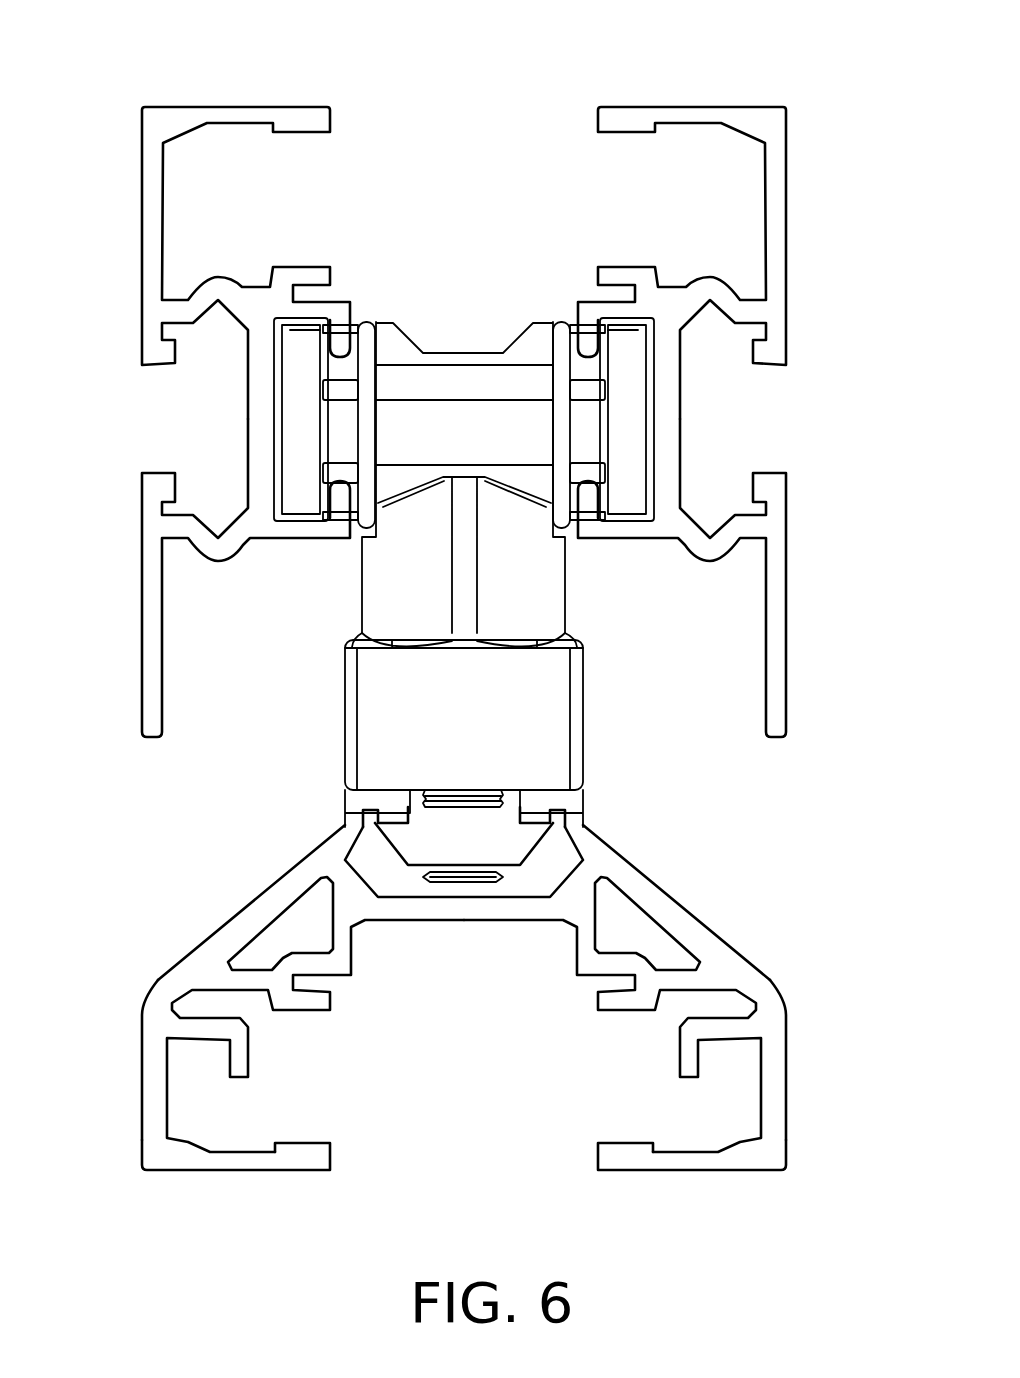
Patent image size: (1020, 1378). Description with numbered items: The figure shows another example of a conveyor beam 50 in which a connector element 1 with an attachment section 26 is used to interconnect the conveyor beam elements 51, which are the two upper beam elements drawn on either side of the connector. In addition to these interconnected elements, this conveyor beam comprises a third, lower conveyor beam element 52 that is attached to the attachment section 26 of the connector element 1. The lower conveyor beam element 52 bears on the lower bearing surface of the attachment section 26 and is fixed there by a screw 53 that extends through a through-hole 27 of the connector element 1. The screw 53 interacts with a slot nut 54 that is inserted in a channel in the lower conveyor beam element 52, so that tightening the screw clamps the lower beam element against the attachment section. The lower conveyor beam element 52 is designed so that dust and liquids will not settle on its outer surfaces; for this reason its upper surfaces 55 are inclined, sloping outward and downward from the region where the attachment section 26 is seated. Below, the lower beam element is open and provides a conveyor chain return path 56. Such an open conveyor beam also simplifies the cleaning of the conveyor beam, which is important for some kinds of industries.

The conveyor beam 50 is at (824, 68).
The conveyor beam element 51 is at (148, 228).
The lower conveyor beam element 52 is at (727, 970).
The inclined upper surface 55 is at (236, 880).
The conveyor chain return path 56 is at (548, 1170).
The connector element 1 is at (492, 300).
The through-hole 27 is at (424, 338).
The attachment section 26 is at (532, 708).
The screw 53 is at (505, 793).
The slot nut 54 is at (427, 843).